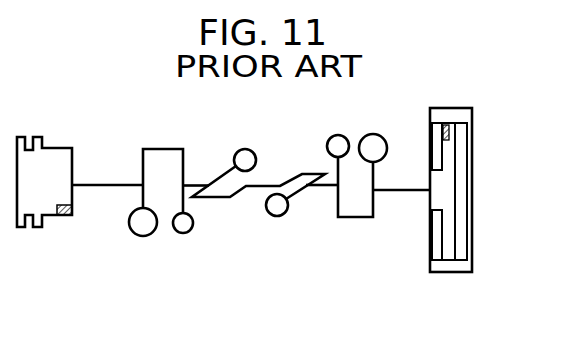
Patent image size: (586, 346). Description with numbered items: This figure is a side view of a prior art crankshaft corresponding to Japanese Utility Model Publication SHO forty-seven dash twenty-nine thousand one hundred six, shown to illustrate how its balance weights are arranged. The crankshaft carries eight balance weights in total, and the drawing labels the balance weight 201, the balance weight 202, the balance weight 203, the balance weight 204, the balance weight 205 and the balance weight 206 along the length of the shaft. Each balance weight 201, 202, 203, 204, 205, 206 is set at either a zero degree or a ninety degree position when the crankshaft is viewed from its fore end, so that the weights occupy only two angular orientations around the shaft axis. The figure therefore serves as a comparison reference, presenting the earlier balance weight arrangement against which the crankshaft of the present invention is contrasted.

The balance weight 201 is at (131, 231).
The balance weight 202 is at (189, 232).
The balance weight 203 is at (240, 150).
The balance weight 204 is at (282, 215).
The balance weight 205 is at (329, 140).
The balance weight 206 is at (373, 134).